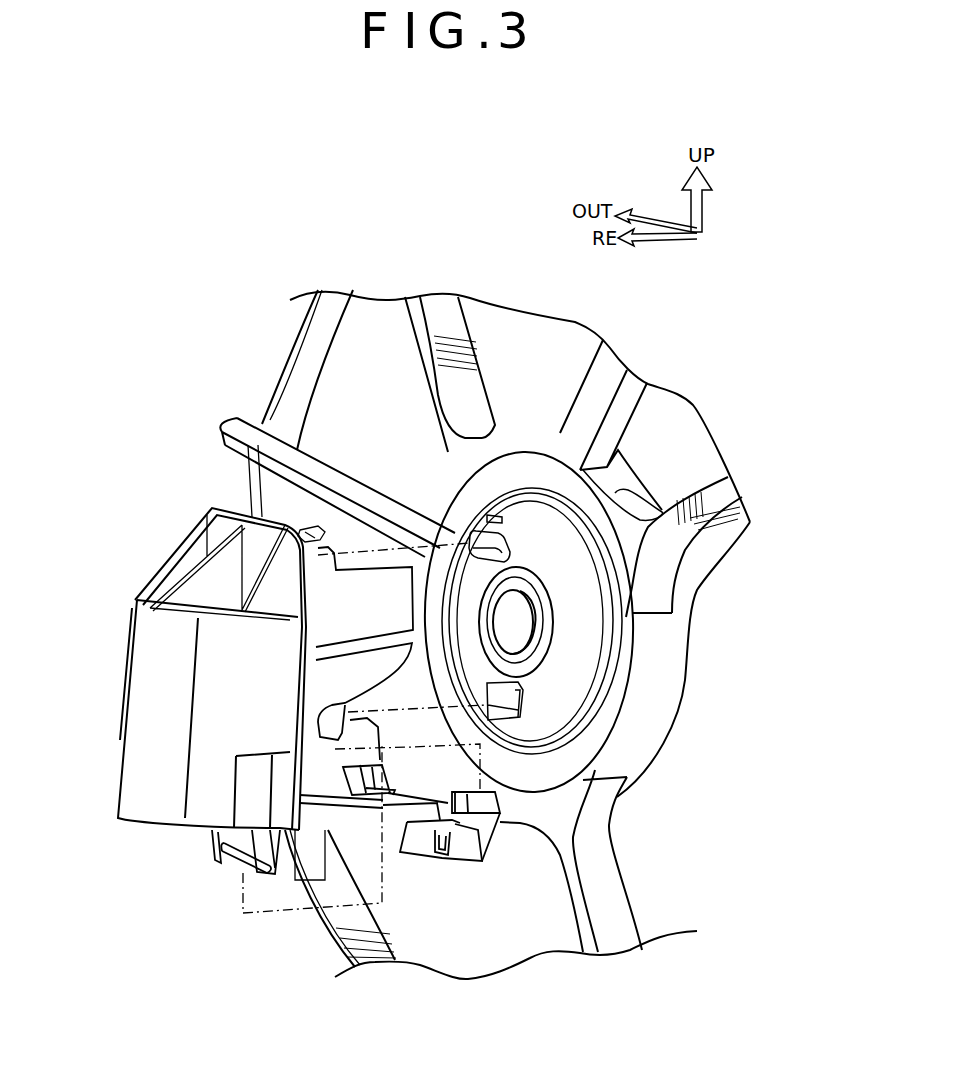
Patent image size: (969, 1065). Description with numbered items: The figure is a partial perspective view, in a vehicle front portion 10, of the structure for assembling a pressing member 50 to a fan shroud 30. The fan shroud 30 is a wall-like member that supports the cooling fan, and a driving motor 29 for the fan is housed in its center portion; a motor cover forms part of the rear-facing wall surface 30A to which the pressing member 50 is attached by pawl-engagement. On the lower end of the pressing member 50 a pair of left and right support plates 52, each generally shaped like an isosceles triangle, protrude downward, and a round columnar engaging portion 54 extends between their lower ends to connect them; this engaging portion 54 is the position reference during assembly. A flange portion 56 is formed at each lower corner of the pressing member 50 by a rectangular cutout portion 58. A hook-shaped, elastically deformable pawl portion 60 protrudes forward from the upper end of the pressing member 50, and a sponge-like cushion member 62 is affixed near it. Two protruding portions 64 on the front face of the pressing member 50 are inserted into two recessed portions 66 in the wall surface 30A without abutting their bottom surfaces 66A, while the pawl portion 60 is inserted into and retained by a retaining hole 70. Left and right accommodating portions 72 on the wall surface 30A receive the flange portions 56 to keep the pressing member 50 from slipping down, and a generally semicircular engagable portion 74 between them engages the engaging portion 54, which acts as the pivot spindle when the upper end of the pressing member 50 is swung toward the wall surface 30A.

The vehicle front portion 10 is at (149, 507).
The driving motor 29 is at (513, 617).
The fan shroud 30 is at (693, 617).
The wall surface 30A is at (580, 640).
The pressing member 50 is at (122, 690).
The support plates 52 is at (213, 838).
The engaging portion 54 is at (228, 860).
The flange portion 56 is at (287, 800).
The cutout portion 58 is at (245, 785).
The pawl portion 60 is at (318, 530).
The cushion member 62 is at (452, 860).
The protruding portions 64 is at (327, 568).
The recessed portions 66 is at (502, 550).
The bottom surfaces 66A is at (498, 553).
The retaining hole 70 is at (487, 518).
The accommodating portions 72 is at (360, 783).
The engagable portion 74 is at (417, 845).